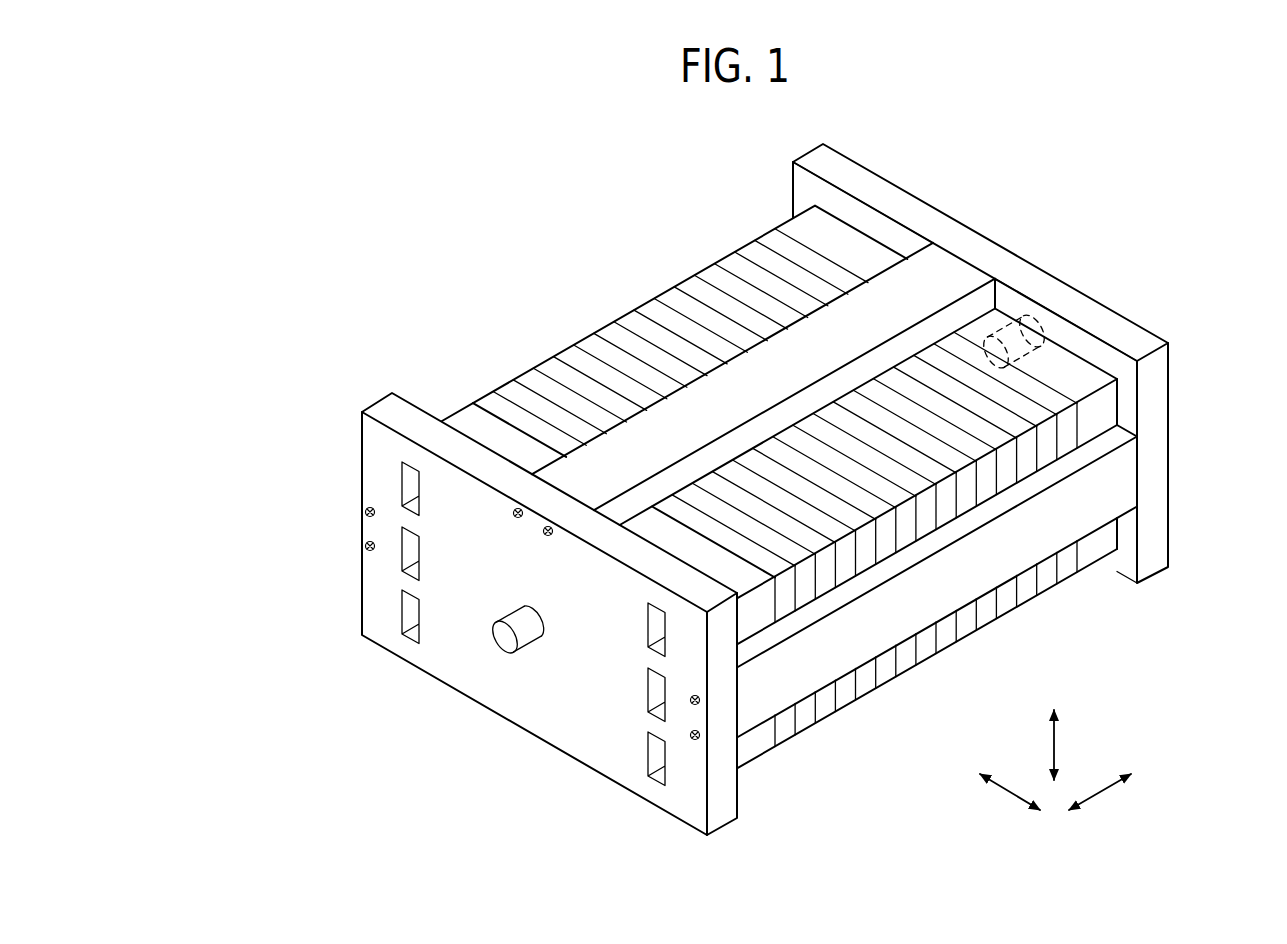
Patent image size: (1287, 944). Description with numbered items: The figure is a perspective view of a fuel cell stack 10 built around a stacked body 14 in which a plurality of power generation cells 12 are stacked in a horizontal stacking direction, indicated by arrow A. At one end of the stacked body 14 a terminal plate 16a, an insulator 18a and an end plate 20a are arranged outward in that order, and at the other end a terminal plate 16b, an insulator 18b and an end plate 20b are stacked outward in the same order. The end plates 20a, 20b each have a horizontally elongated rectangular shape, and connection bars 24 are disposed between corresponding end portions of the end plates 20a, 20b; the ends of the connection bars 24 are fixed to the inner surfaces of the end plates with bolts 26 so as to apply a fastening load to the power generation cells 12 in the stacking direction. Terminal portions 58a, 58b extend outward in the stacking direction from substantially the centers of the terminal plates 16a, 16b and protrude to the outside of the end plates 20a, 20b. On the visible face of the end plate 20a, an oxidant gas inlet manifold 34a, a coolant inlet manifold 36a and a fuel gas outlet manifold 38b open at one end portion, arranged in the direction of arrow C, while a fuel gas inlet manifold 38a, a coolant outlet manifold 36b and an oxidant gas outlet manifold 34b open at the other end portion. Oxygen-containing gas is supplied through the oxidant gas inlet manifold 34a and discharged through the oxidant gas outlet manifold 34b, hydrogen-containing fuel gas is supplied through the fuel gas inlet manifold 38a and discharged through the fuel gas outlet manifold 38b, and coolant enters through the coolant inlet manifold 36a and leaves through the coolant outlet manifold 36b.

The fuel cell stack 10 is at (928, 116).
The power generation cell 12 is at (664, 286).
The stacked body 14 is at (779, 487).
The terminal plate 16a is at (753, 622).
The terminal plate 16b is at (847, 253).
The insulator 18a is at (757, 748).
The insulator 18b is at (810, 217).
The end plate 20a is at (392, 388).
The end plate 20b is at (1144, 323).
The connection bar 24 is at (950, 272).
The bolt 26 is at (524, 511).
The oxidant gas inlet manifold 34a is at (646, 617).
The oxidant gas outlet manifold 34b is at (402, 611).
The coolant inlet manifold 36a is at (647, 703).
The coolant outlet manifold 36b is at (403, 545).
The fuel gas inlet manifold 38a is at (403, 479).
The fuel gas outlet manifold 38b is at (655, 781).
The terminal portion 58a is at (499, 631).
The terminal portion 58b is at (1067, 348).